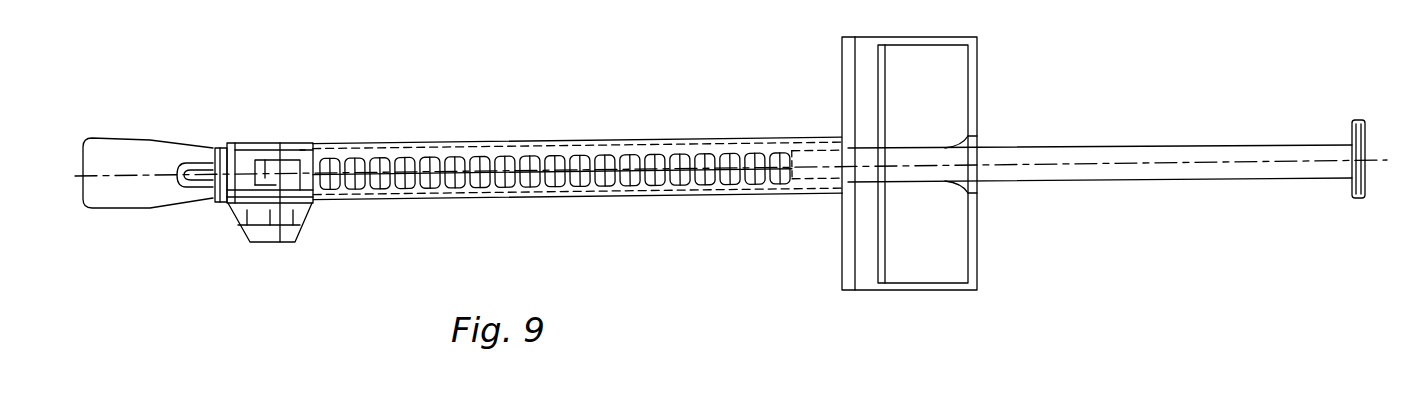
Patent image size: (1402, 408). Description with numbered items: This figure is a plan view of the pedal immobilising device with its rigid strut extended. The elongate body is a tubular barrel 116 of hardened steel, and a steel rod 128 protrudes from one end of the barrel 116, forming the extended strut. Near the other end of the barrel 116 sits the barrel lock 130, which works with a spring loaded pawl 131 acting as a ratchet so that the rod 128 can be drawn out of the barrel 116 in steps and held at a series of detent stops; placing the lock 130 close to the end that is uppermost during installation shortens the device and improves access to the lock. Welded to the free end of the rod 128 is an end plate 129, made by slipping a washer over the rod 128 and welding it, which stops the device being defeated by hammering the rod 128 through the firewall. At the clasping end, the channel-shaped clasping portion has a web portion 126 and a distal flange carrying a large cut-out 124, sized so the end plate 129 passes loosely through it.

The tubular barrel 116 is at (614, 138).
The cut-out 124 is at (962, 188).
The web portion 126 is at (928, 268).
The steel rod 128 is at (1133, 143).
The end plate 129 is at (1353, 185).
The barrel lock 130 is at (232, 218).
The spring loaded pawl 131 is at (277, 170).